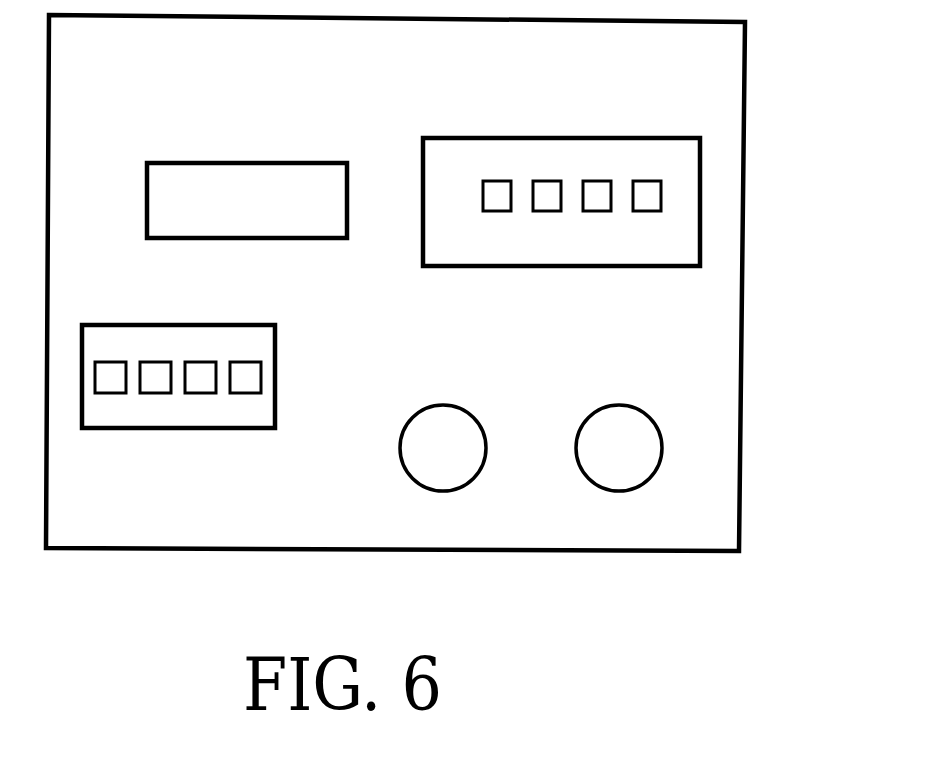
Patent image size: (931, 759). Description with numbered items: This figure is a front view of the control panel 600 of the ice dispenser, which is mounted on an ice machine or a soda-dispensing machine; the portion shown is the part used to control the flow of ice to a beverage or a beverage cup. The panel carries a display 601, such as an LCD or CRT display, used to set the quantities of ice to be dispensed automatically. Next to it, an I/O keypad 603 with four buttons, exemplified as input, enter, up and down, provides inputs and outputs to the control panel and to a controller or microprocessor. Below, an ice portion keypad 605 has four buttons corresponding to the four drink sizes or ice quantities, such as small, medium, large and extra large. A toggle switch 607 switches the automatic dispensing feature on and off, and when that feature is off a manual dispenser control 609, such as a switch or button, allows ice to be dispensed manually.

The control panel 600 is at (705, 455).
The display 601 is at (257, 176).
The I/O keypad 603 is at (450, 161).
The ice portion keypad 605 is at (160, 420).
The toggle switch 607 is at (430, 453).
The manual dispenser control 609 is at (607, 453).